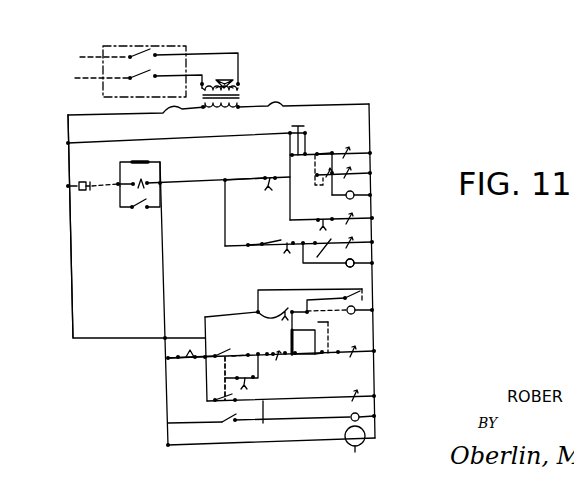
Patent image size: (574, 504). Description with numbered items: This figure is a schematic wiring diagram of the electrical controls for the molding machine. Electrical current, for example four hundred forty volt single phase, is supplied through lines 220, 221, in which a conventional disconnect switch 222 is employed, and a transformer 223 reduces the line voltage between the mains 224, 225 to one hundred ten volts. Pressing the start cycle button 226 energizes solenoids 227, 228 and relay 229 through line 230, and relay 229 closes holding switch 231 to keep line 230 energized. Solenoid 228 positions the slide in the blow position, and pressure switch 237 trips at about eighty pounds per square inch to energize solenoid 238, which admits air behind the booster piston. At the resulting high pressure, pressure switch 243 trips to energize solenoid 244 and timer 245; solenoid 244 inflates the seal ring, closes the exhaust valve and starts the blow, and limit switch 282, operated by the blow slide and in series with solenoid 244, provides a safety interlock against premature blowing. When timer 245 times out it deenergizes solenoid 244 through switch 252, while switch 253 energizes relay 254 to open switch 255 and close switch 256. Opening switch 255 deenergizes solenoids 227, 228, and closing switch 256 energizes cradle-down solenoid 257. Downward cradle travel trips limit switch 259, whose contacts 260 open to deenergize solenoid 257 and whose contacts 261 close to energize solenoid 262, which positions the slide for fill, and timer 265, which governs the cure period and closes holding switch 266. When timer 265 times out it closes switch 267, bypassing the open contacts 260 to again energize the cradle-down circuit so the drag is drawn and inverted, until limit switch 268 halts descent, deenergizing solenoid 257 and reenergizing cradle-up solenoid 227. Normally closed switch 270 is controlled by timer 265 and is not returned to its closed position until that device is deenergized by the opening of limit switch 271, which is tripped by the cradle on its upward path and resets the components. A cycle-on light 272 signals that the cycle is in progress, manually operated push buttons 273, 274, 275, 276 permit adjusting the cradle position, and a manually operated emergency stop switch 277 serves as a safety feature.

The line 220 is at (80, 57).
The line 221 is at (75, 78).
The disconnect switch 222 is at (143, 53).
The transformer 223 is at (243, 91).
The main 224 is at (68, 292).
The main 225 is at (375, 291).
The start cycle button 226 is at (148, 156).
The cradle-up solenoid 227 is at (352, 150).
The solenoid 228 is at (352, 172).
The relay 229 is at (360, 190).
The line 230 is at (240, 176).
The holding switch 231 is at (140, 212).
The pressure switch 237 is at (326, 220).
The solenoid 238 is at (372, 222).
The pressure switch 243 is at (285, 243).
The solenoid 244 is at (372, 243).
The timer 245 is at (360, 267).
The switch 252 is at (313, 265).
The switch 253 is at (257, 311).
The relay 254 is at (358, 314).
The switch 255 is at (270, 182).
The switch 256 is at (277, 358).
The cradle-down solenoid 257 is at (362, 352).
The limit switch 259 is at (218, 390).
The contacts 260 is at (228, 355).
The contacts 261 is at (226, 404).
The solenoid 262 is at (365, 392).
The timer 265 is at (362, 420).
The holding switch 266 is at (238, 425).
The switch 267 is at (253, 385).
The limit switch 268 is at (168, 357).
The normally closed switch 270 is at (330, 152).
The limit switch 271 is at (148, 179).
The cycle-on light 272 is at (352, 449).
The push button 273 is at (290, 133).
The push button 274 is at (298, 126).
The push button 275 is at (290, 333).
The push button 276 is at (332, 338).
The emergency stop switch 277 is at (82, 192).
The limit switch 282 is at (250, 250).